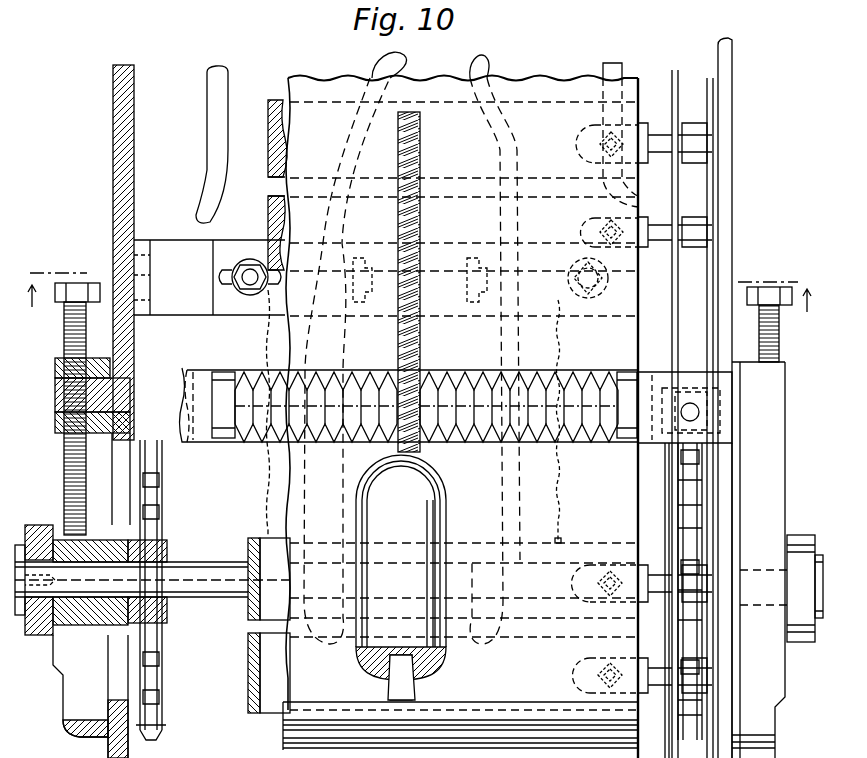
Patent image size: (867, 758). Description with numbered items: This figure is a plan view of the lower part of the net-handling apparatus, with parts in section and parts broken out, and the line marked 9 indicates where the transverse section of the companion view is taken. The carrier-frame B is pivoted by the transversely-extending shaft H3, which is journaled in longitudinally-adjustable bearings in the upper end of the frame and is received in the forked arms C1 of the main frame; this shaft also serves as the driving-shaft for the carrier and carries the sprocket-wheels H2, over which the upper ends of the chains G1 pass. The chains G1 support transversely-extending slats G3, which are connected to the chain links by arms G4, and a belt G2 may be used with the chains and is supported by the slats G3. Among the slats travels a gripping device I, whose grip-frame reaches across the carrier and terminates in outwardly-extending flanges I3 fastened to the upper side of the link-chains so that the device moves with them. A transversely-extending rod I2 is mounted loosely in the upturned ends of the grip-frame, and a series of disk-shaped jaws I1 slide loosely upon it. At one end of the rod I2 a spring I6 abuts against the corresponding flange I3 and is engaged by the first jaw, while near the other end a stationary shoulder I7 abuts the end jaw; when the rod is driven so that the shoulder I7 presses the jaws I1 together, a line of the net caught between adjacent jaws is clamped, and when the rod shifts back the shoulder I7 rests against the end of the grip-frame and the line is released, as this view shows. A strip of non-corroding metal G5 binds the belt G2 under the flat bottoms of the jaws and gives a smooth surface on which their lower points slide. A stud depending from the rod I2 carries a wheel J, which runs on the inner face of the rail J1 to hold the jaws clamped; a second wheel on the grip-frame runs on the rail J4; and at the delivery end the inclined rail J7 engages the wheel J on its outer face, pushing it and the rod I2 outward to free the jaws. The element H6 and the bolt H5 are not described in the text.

The carrier-frame B is at (127, 160).
The rail J1 is at (213, 128).
The rail J7 is at (352, 160).
The wheel J is at (516, 160).
The rail J4 is at (617, 71).
The arms G4 is at (650, 690).
The chains G1 is at (700, 228).
The slats G3 is at (250, 652).
The strip of non-corroding metal G5 is at (470, 443).
The belt G2 is at (560, 500).
The bearing circle H6 is at (583, 300).
The adjusting bolt H5 is at (249, 312).
The shaft H3 is at (217, 570).
The sprocket-wheels H2 is at (674, 640).
The flanges I3 is at (663, 374).
The jaws I1 is at (450, 370).
The gripping device I is at (519, 392).
The stationary shoulder I7 is at (223, 438).
The spring I6 is at (619, 442).
The rod I2 is at (266, 494).
The forked arms C1 is at (798, 535).
The section line of Fig. 9 is at (415, 307).